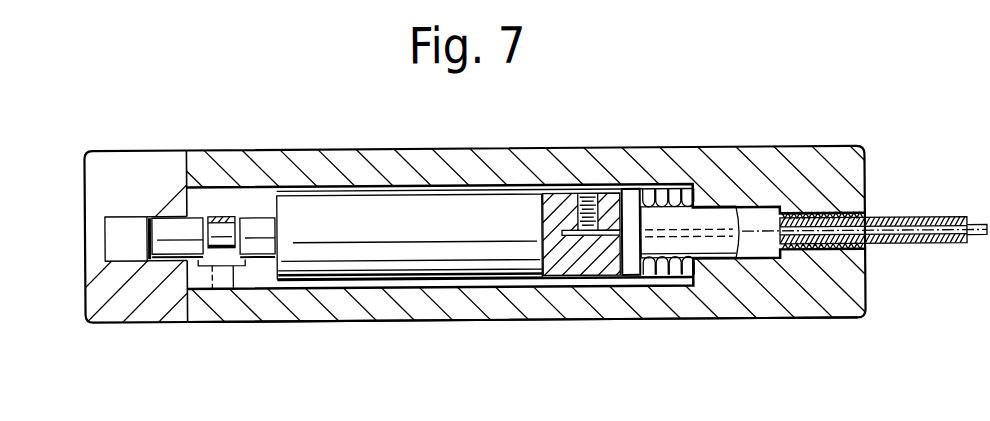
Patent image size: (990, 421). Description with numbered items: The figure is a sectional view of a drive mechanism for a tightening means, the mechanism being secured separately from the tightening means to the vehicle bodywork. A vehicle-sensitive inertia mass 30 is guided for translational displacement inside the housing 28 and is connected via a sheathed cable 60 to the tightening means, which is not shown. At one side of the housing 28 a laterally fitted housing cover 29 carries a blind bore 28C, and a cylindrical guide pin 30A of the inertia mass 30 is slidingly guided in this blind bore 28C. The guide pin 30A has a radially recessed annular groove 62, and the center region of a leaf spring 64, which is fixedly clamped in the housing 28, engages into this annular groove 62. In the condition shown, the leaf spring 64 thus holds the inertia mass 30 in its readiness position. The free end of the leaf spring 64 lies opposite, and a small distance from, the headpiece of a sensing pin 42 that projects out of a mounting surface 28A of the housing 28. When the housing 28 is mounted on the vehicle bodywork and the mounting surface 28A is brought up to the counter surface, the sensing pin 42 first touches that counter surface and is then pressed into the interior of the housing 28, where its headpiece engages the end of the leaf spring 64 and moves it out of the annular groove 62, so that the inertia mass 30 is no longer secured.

The housing 28 is at (380, 147).
The mounting surface 28A is at (582, 321).
The blind bore 28C is at (127, 222).
The housing cover 29 is at (121, 294).
The inertia mass 30 is at (500, 206).
The guide pin 30A is at (168, 228).
The sensing pin 42 is at (212, 288).
The sheathed cable 60 is at (918, 221).
The annular groove 62 is at (233, 288).
The leaf spring 64 is at (228, 212).